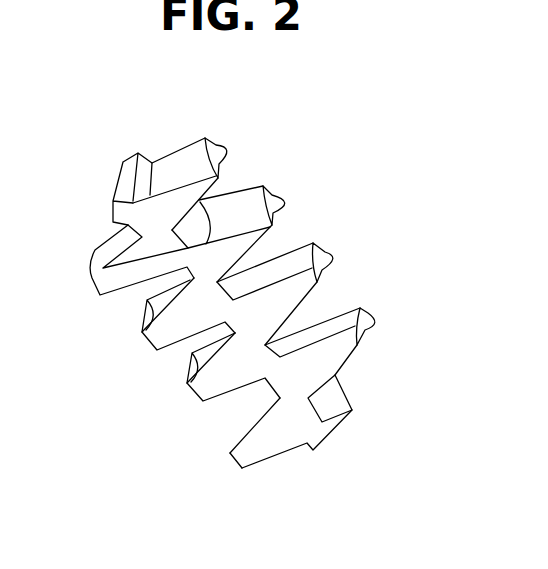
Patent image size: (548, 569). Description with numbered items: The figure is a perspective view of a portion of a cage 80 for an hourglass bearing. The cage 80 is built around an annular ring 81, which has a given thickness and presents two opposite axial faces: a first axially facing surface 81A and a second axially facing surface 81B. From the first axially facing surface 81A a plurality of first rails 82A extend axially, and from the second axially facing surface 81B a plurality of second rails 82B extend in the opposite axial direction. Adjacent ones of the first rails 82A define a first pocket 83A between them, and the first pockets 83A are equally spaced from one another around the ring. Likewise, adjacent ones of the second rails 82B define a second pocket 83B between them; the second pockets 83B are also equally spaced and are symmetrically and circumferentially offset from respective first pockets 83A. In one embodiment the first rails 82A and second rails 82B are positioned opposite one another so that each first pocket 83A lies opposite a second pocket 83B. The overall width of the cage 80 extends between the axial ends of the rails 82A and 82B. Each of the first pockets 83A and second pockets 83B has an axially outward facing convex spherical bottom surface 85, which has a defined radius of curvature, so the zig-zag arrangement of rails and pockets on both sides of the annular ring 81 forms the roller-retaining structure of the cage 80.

The cage 80 is at (430, 130).
The annular ring 81 is at (132, 209).
The first axially facing surface 81A is at (345, 400).
The second axially facing surface 81B is at (279, 398).
The first rails 82A is at (210, 134).
The second rails 82B is at (100, 300).
The first pocket 83A is at (250, 170).
The second pocket 83B is at (133, 311).
The convex spherical bottom surface 85 is at (256, 264).